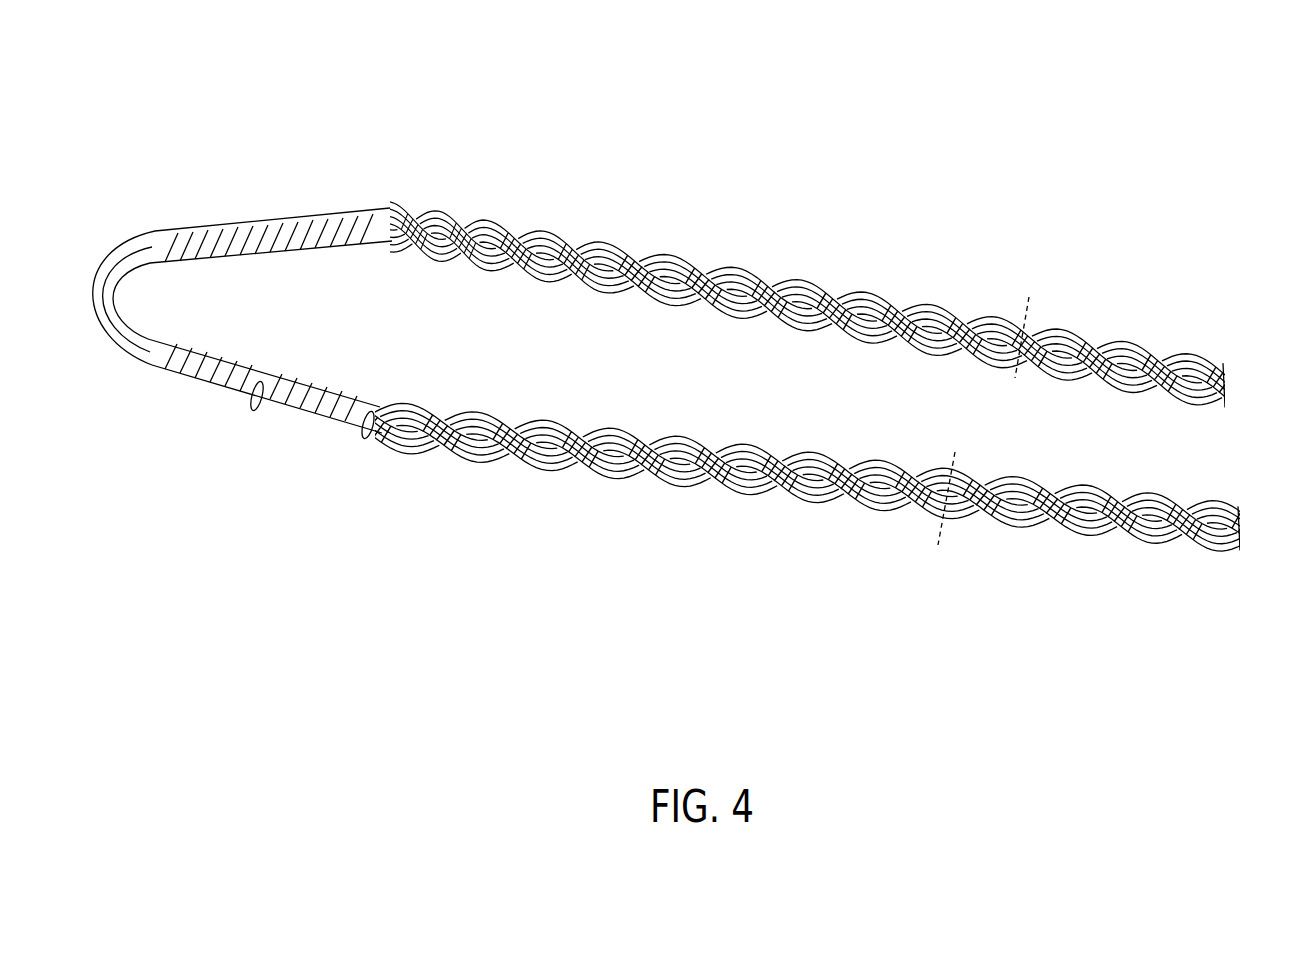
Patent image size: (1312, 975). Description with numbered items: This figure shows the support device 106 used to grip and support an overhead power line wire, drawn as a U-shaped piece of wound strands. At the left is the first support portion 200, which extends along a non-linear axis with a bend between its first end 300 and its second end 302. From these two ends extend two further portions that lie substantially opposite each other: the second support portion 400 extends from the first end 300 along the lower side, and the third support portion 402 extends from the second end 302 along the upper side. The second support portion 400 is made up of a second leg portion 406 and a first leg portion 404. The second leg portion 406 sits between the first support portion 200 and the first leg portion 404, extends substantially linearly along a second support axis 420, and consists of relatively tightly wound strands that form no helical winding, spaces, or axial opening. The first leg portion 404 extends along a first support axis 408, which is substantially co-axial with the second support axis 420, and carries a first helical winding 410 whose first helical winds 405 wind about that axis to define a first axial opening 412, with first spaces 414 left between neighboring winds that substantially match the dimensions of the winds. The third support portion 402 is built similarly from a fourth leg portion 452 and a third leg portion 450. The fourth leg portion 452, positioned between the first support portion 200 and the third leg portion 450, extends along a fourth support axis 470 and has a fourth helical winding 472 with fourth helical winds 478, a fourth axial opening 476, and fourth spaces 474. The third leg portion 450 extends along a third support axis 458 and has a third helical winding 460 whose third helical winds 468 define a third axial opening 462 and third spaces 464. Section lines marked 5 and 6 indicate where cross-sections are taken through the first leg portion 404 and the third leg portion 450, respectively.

The first support portion 200 is at (100, 178).
The support device 106 is at (205, 162).
The third support portion 402 is at (805, 84).
The third leg portion 450 is at (1255, 143).
The fourth leg portion 452 is at (365, 142).
The second end 302 is at (372, 210).
The fourth spaces 474 is at (413, 216).
The fourth helical winds 478 is at (474, 226).
The fourth axial opening 476 is at (385, 246).
The fourth support axis 470 is at (415, 275).
The fourth helical winding 472 is at (470, 272).
The third helical winds 468 is at (738, 266).
The third axial opening 462 is at (828, 288).
The third spaces 464 is at (947, 307).
The third helical winding 460 is at (1135, 342).
The third support axis 458 is at (1242, 390).
The section line 6- 6 is at (1002, 336).
The first end 300 is at (340, 422).
The second support axis 420 is at (383, 440).
The second leg portion 406 is at (305, 622).
The first leg portion 404 is at (478, 622).
The second support portion 400 is at (788, 670).
The first axial opening 412 is at (725, 475).
The first helical winds 405 is at (770, 492).
The first spaces 414 is at (848, 518).
The section line 5- 5 is at (927, 487).
The first helical winding 410 is at (1060, 532).
The first support axis 408 is at (1242, 530).